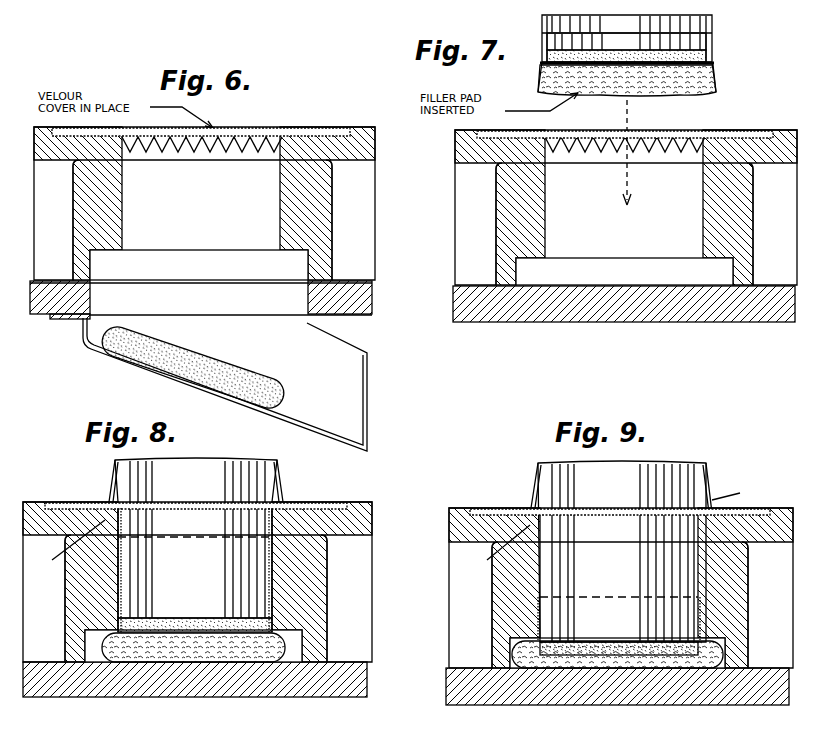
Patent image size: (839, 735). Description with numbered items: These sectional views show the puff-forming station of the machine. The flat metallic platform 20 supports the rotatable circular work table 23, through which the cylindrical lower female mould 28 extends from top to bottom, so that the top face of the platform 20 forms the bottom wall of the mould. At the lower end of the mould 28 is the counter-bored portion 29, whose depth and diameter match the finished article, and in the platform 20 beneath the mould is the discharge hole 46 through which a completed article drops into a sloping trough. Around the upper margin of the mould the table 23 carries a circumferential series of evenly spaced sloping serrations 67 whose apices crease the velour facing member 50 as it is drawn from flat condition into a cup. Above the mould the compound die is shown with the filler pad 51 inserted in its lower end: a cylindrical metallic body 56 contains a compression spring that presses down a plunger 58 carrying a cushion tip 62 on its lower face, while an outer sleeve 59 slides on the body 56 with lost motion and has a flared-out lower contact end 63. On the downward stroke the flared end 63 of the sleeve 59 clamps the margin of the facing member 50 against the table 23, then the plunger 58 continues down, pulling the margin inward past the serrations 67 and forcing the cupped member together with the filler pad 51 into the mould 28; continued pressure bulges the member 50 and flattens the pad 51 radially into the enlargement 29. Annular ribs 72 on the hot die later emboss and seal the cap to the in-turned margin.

In FIG. 6, the platform 20 is at (372, 314).
In FIG. 7, the platform 20 is at (492, 322).
In FIG. 8, the platform 20 is at (330, 697).
In FIG. 9, the platform 20 is at (480, 697).
In FIG. 6, the work table 23 is at (375, 158).
In FIG. 7, the work table 23 is at (455, 166).
In FIG. 8, the work table 23 is at (372, 533).
In FIG. 9, the work table 23 is at (449, 546).
In FIG. 6, the mould 28 is at (272, 208).
In FIG. 7, the mould 28 is at (548, 215).
In FIG. 8, the mould 28 is at (276, 520).
In FIG. 9, the mould 28 is at (700, 590).
In FIG. 6, the counter-bored portion 29 is at (300, 268).
In FIG. 7, the counter-bored portion 29 is at (525, 270).
In FIG. 8, the counter-bored portion 29 is at (300, 646).
In FIG. 9, the counter-bored portion 29 is at (510, 650).
In FIG. 6, the discharge hole 46 is at (265, 311).
In FIG. 6, the facing member 50 is at (272, 130).
In FIG. 7, the facing member 50 is at (740, 129).
In FIG. 8, the facing member 50 is at (273, 596).
In FIG. 9, the facing member 50 is at (540, 668).
In FIG. 7, the filler pad 51 is at (700, 91).
In FIG. 8, the filler pad 51 is at (170, 650).
In FIG. 9, the filler pad 51 is at (595, 680).
In FIG. 8, the body 56 is at (198, 463).
In FIG. 9, the body 56 is at (615, 478).
In FIG. 7, the plunger 58 is at (545, 46).
In FIG. 8, the plunger 58 is at (190, 555).
In FIG. 9, the plunger 58 is at (605, 610).
In FIG. 7, the outer sleeve 59 is at (712, 45).
In FIG. 8, the outer sleeve 59 is at (280, 475).
In FIG. 9, the outer sleeve 59 is at (535, 470).
In FIG. 8, the cushion tip 62 is at (185, 618).
In FIG. 9, the cushion tip 62 is at (620, 645).
In FIG. 7, the flared-out lower contact end 63 is at (714, 82).
In FIG. 8, the flared-out lower contact end 63 is at (109, 492).
In FIG. 9, the flared-out lower contact end 63 is at (737, 492).
In FIG. 6, the serrations 67 is at (152, 150).
In FIG. 7, the serrations 67 is at (652, 150).
In FIG. 8, the serrations 67 is at (68, 548).
In FIG. 9, the serrations 67 is at (498, 548).
In FIG. 7, the annular ribs 72 is at (628, 52).